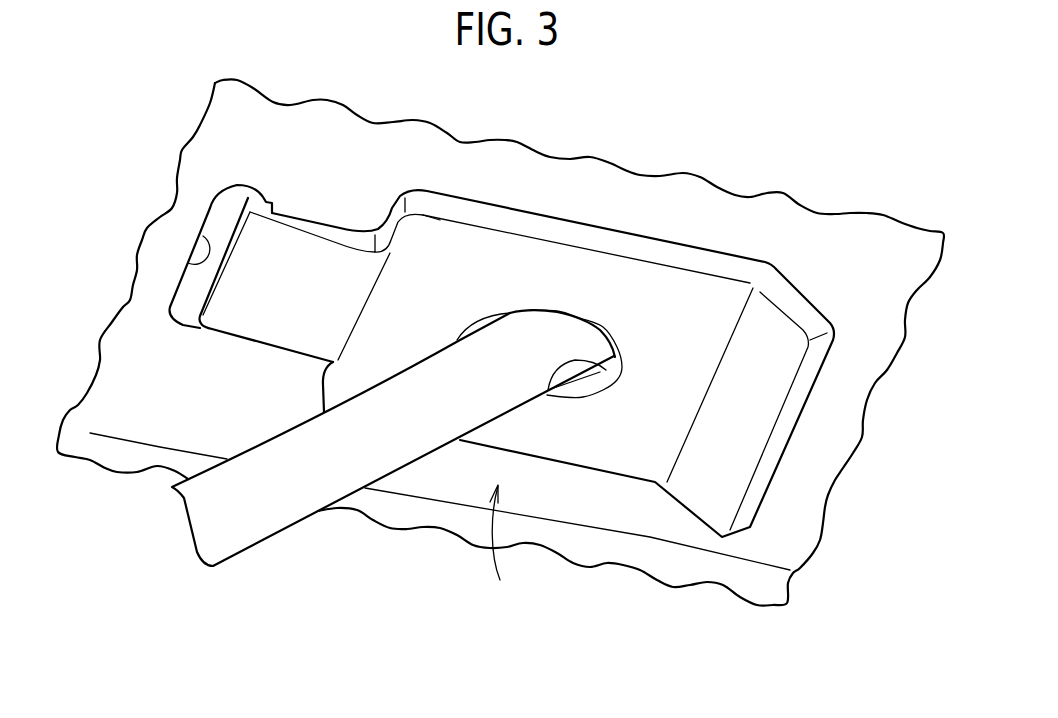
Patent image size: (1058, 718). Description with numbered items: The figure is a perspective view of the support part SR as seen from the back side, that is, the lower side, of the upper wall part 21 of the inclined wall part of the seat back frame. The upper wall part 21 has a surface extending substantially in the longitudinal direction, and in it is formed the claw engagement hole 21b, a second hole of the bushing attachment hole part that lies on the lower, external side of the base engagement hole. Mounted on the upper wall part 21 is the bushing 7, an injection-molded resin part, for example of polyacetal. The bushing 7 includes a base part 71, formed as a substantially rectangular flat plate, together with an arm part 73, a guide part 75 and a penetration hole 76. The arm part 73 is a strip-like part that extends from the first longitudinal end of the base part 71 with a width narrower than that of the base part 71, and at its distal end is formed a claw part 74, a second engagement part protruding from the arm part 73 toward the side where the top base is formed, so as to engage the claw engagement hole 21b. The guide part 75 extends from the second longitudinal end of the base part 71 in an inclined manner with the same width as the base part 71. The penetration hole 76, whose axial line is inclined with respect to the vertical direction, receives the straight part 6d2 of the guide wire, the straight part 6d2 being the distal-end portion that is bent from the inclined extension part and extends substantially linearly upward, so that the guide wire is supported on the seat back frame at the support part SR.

The upper wall part 21 is at (577, 184).
The claw engagement hole 21b is at (208, 245).
The bushing 7 is at (688, 255).
The base part 71 is at (463, 247).
The arm part 73 is at (278, 315).
The claw part 74 is at (255, 188).
The guide part 75 is at (800, 310).
The penetration hole 76 is at (548, 390).
The straight part 6d2 is at (417, 438).
The support part SR is at (507, 554).